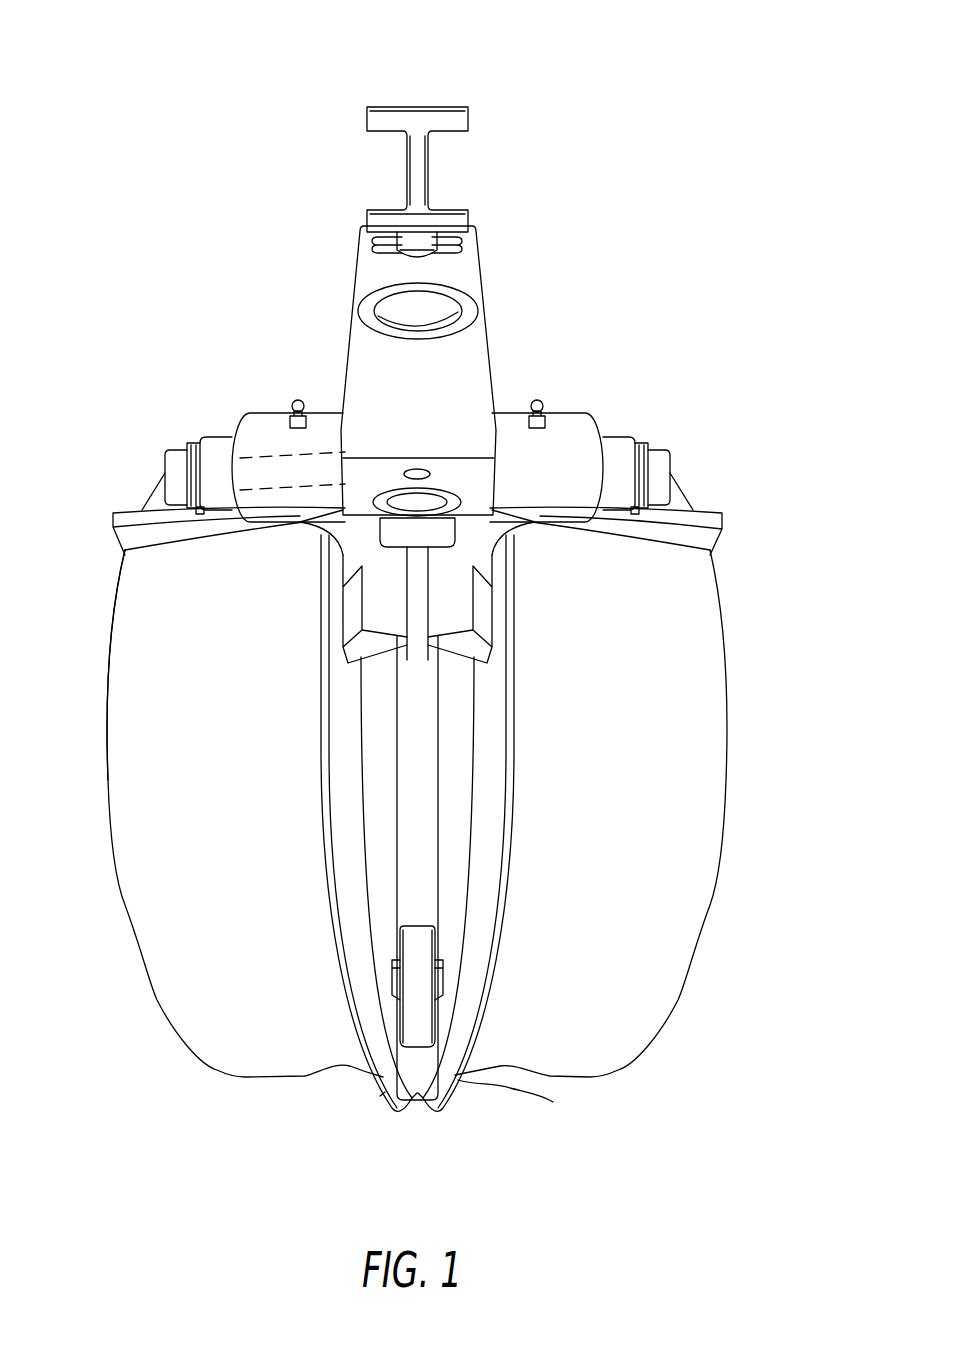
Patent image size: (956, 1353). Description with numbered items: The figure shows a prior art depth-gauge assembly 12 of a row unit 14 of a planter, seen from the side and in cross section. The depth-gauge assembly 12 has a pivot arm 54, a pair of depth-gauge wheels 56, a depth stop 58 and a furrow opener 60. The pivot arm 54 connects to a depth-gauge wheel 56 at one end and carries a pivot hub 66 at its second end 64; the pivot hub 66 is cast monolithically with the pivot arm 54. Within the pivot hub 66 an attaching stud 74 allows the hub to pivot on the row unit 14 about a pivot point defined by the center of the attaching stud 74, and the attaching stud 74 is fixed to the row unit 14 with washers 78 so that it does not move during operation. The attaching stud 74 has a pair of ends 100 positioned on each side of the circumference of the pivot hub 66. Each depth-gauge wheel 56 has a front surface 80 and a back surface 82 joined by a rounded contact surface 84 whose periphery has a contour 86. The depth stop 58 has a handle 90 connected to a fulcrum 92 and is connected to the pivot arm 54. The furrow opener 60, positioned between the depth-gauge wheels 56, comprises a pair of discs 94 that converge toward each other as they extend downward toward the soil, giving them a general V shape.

The depth-gauge assembly 12 is at (715, 330).
The row unit 14 is at (537, 82).
The pivot arm 54 is at (302, 520).
The depth-gauge wheel 56 is at (700, 692).
The depth stop 58 is at (275, 140).
The furrow opener 60 is at (483, 1148).
The second end 64 is at (342, 407).
The pivot hub 66 is at (570, 430).
The attaching stud 74 is at (250, 467).
The washer 78 is at (203, 440).
The front surface 80 is at (157, 1003).
The back surface 82 is at (553, 1102).
The contact surface 84 is at (216, 812).
The contour 86 is at (232, 1100).
The handle 90 is at (413, 122).
The fulcrum 92 is at (443, 530).
The disc 94 is at (392, 1092).
The end 100 is at (640, 472).